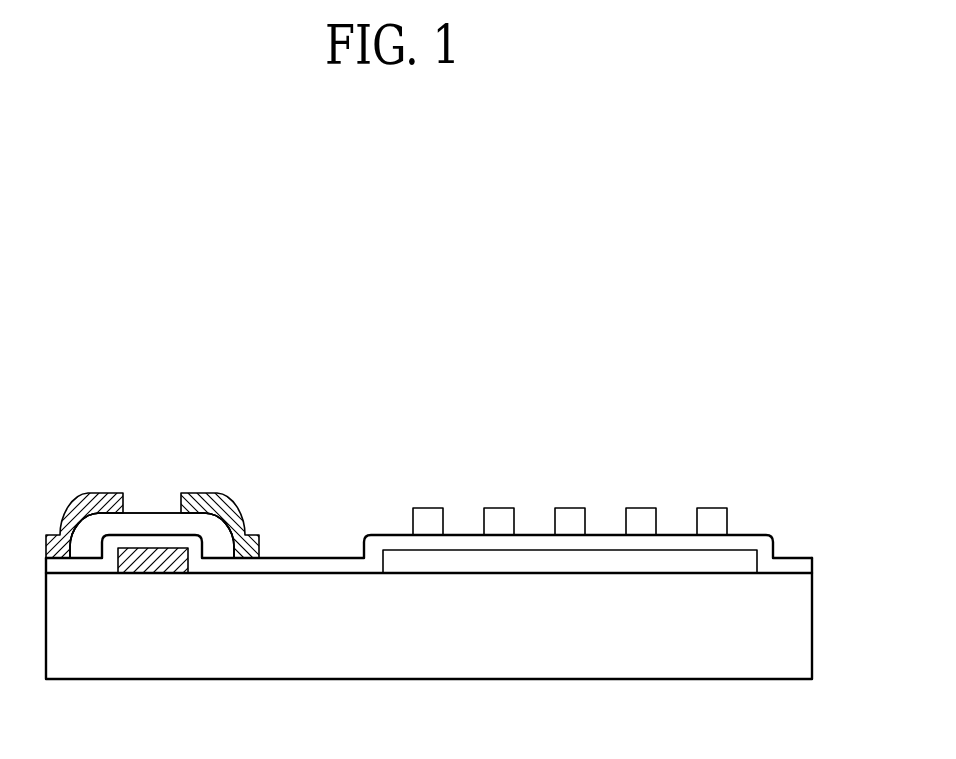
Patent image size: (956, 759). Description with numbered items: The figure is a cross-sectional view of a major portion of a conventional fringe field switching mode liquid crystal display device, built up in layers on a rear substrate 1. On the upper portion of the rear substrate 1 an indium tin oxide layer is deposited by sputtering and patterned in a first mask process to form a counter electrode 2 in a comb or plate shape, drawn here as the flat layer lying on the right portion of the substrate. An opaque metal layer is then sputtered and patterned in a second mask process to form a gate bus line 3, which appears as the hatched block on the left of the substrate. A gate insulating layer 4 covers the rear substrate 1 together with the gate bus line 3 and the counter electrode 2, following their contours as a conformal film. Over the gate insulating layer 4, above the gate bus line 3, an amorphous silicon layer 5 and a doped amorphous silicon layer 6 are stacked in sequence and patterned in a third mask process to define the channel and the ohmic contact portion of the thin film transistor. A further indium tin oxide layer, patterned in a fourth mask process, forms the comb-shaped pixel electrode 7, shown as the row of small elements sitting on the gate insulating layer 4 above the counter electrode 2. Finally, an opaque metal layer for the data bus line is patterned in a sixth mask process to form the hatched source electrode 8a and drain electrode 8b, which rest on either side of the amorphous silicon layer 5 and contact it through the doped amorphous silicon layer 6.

The rear substrate 1 is at (798, 626).
The counter electrode 2 is at (560, 565).
The gate bus line 3 is at (162, 563).
The gate insulating layer 4 is at (312, 565).
The amorphous silicon layer 5 is at (213, 540).
The doped amorphous silicon layer 6 is at (64, 520).
The pixel electrode 7 is at (713, 517).
The source electrode 8a is at (95, 492).
The drain electrode 8b is at (209, 492).